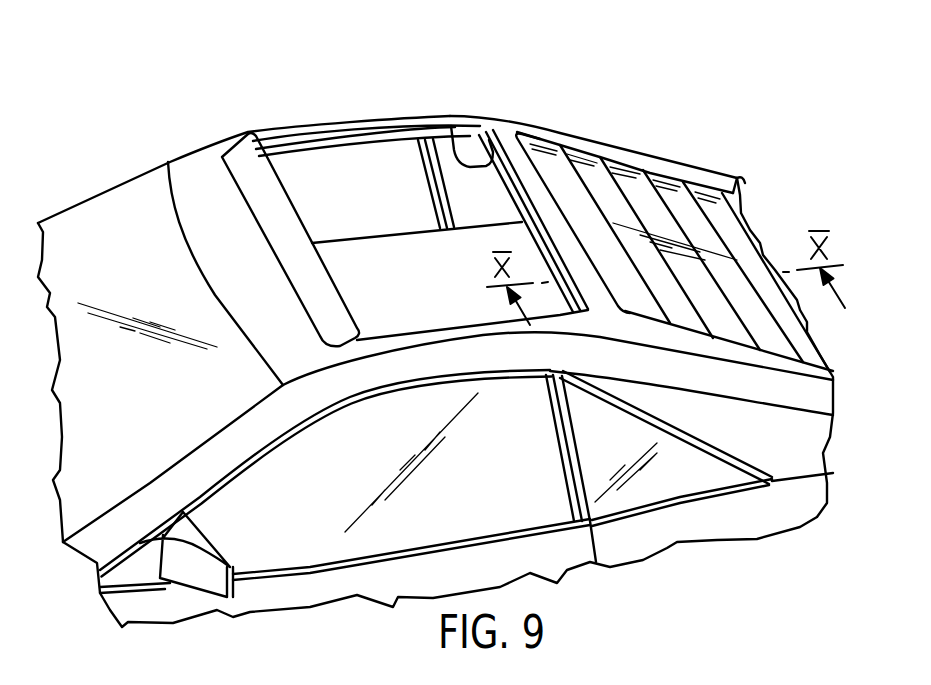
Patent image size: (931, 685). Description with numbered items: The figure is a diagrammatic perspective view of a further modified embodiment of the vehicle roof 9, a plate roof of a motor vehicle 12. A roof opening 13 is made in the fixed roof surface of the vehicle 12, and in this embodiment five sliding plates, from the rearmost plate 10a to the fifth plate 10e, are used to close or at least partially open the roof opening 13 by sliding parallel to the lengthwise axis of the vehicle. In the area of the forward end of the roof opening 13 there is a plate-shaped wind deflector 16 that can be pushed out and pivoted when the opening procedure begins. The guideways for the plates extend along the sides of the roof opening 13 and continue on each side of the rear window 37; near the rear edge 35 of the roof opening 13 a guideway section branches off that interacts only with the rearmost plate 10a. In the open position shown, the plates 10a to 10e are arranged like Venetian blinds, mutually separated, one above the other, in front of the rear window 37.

The vehicle roof 9 is at (182, 140).
The motor vehicle 12 is at (678, 557).
The roof opening 13 is at (401, 280).
The wind deflector 16 is at (255, 156).
The sliding plate 10a is at (681, 202).
The sliding plate 10e is at (451, 126).
The rear edge 35 is at (483, 140).
The rear window 37 is at (618, 205).